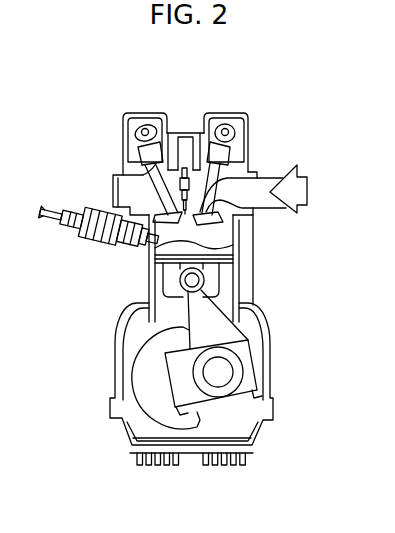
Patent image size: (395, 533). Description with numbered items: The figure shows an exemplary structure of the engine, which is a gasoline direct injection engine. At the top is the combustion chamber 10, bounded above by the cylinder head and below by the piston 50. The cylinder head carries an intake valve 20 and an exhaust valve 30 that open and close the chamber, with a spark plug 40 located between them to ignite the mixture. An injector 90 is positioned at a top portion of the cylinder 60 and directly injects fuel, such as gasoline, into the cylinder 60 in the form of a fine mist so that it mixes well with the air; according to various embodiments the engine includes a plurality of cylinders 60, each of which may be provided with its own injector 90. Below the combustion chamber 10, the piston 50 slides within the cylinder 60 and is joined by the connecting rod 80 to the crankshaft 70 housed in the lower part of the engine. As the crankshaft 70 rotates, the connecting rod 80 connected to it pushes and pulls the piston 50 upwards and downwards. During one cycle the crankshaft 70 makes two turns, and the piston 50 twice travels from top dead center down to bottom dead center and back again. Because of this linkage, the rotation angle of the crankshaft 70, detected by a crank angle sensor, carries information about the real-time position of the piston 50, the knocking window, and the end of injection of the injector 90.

The combustion chamber 10 is at (293, 257).
The intake valve 20 is at (280, 140).
The exhaust valve 30 is at (150, 180).
The spark plug 40 is at (188, 166).
The piston 50 is at (86, 284).
The cylinder 60 is at (148, 298).
The crankshaft 70 is at (303, 395).
The connecting rod 80 is at (297, 315).
The injector 90 is at (88, 242).